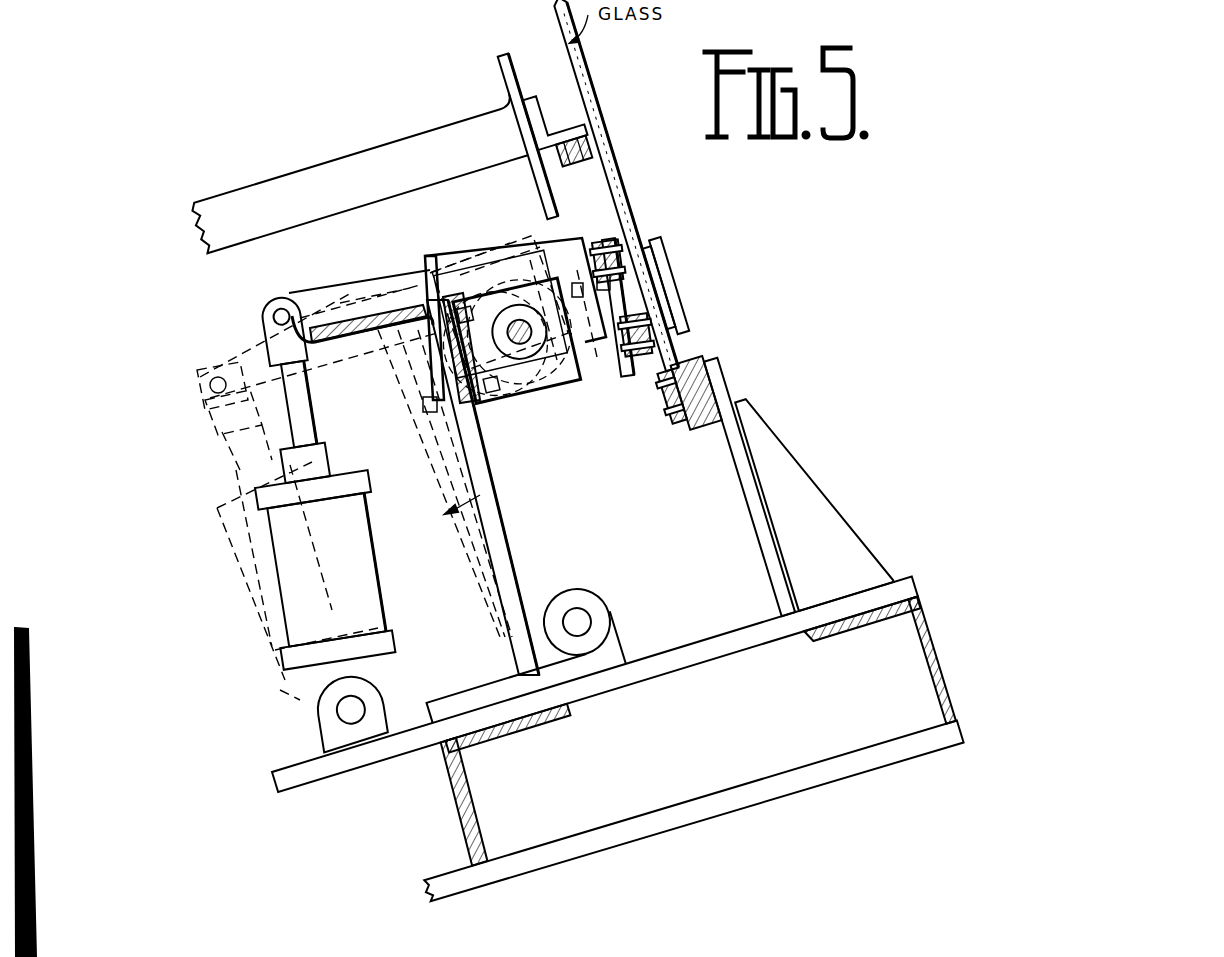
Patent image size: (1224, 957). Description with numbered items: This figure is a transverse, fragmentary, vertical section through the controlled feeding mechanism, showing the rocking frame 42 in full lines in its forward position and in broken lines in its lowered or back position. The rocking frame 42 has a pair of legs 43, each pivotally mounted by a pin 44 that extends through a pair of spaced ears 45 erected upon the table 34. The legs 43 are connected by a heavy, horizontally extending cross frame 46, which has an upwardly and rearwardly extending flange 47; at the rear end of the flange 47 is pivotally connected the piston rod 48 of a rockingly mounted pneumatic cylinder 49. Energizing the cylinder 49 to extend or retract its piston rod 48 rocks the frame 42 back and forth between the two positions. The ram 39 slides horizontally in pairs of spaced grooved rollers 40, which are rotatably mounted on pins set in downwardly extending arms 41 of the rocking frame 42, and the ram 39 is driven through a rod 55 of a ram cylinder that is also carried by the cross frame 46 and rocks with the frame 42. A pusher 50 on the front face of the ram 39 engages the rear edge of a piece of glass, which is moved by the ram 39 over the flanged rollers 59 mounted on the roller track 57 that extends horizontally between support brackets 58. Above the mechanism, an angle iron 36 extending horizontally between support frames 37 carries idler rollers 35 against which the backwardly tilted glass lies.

The table 34 is at (553, 720).
The idler rollers 35 is at (557, 160).
The angle iron 36 is at (547, 102).
The support frames 37 is at (325, 167).
The ram 39 is at (663, 307).
The grooved rollers 40 is at (623, 247).
The downwardly extending arms 41 is at (603, 367).
The rocking frame 42 is at (480, 443).
The legs 43 is at (503, 545).
The pin 44 is at (584, 609).
The spaced ears 45 is at (617, 628).
The cross frame 46 is at (495, 268).
The flange 47 is at (367, 273).
The piston rod 48 is at (305, 408).
The pneumatic cylinder 49 is at (400, 567).
The pusher 50 is at (653, 270).
The rod 55 is at (517, 383).
The roller track 57 is at (690, 361).
The support brackets 58 is at (817, 487).
The flanged rollers 59 is at (687, 430).